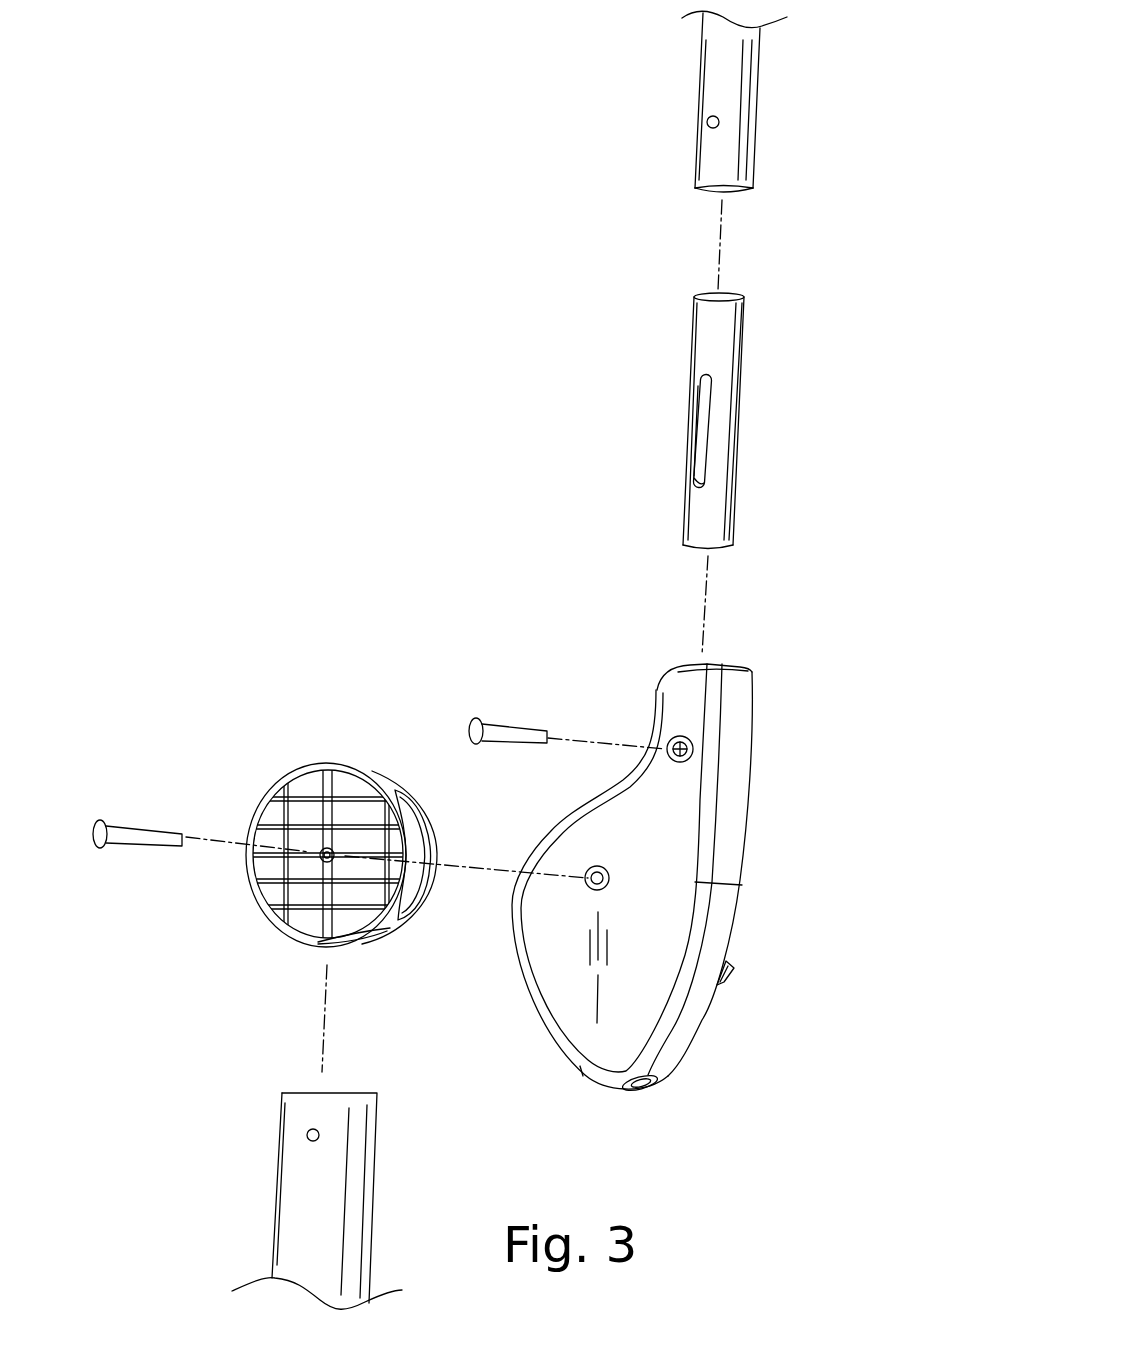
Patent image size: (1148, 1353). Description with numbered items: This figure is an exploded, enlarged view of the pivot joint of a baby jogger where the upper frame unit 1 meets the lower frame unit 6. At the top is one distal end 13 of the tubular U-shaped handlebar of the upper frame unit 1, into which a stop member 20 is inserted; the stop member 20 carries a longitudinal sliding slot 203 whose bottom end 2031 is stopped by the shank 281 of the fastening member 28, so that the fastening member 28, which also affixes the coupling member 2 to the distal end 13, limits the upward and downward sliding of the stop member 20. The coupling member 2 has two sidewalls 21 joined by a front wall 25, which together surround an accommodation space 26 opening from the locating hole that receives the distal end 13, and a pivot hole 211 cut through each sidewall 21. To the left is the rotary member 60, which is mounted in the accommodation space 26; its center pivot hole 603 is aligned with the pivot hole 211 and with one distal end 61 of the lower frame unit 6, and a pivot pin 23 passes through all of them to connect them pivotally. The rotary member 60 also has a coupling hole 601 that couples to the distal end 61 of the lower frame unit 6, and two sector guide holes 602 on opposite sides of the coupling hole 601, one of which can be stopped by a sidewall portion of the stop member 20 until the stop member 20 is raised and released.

The upper frame unit 1 is at (772, 107).
The distal end 13 is at (748, 166).
The stop member 20 is at (692, 347).
The longitudinal sliding slot 203 is at (697, 440).
The bottom end of the longitudinal sliding slot 2031 is at (696, 486).
The coupling member 2 is at (689, 898).
The front wall 25 is at (733, 687).
The sidewall 21 is at (632, 810).
The pivot hole 211 is at (588, 863).
The fastening member 28 is at (492, 663).
The shank 281 is at (536, 727).
The pivot pin 23 is at (103, 818).
The rotary member 60 is at (350, 862).
The coupling hole 601 is at (368, 942).
The sector guide hole 602 is at (412, 890).
The center pivot hole 603 is at (325, 860).
The distal end 61 is at (307, 1120).
The lower frame unit 6 is at (284, 1201).
The accommodation space 26 is at (637, 1090).